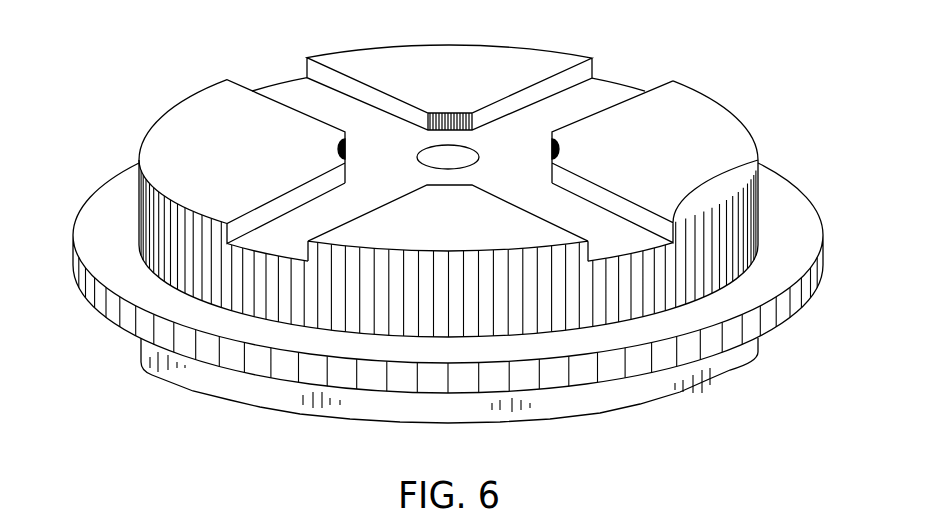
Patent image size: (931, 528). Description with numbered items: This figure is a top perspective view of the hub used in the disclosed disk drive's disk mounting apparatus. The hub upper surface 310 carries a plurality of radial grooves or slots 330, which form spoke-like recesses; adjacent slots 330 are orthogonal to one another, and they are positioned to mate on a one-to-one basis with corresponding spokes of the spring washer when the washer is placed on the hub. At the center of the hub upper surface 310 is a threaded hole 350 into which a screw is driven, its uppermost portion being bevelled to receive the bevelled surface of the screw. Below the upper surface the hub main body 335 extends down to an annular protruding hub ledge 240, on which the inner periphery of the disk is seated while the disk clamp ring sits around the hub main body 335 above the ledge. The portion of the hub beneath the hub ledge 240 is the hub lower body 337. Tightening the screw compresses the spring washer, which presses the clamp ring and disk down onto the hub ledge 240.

The hub ledge 240 is at (93, 228).
The hub upper surface 310 is at (395, 172).
The slots 330 is at (302, 102).
The hub main body 335 is at (141, 196).
The hub lower body 337 is at (150, 367).
The threaded hole 350 is at (432, 153).